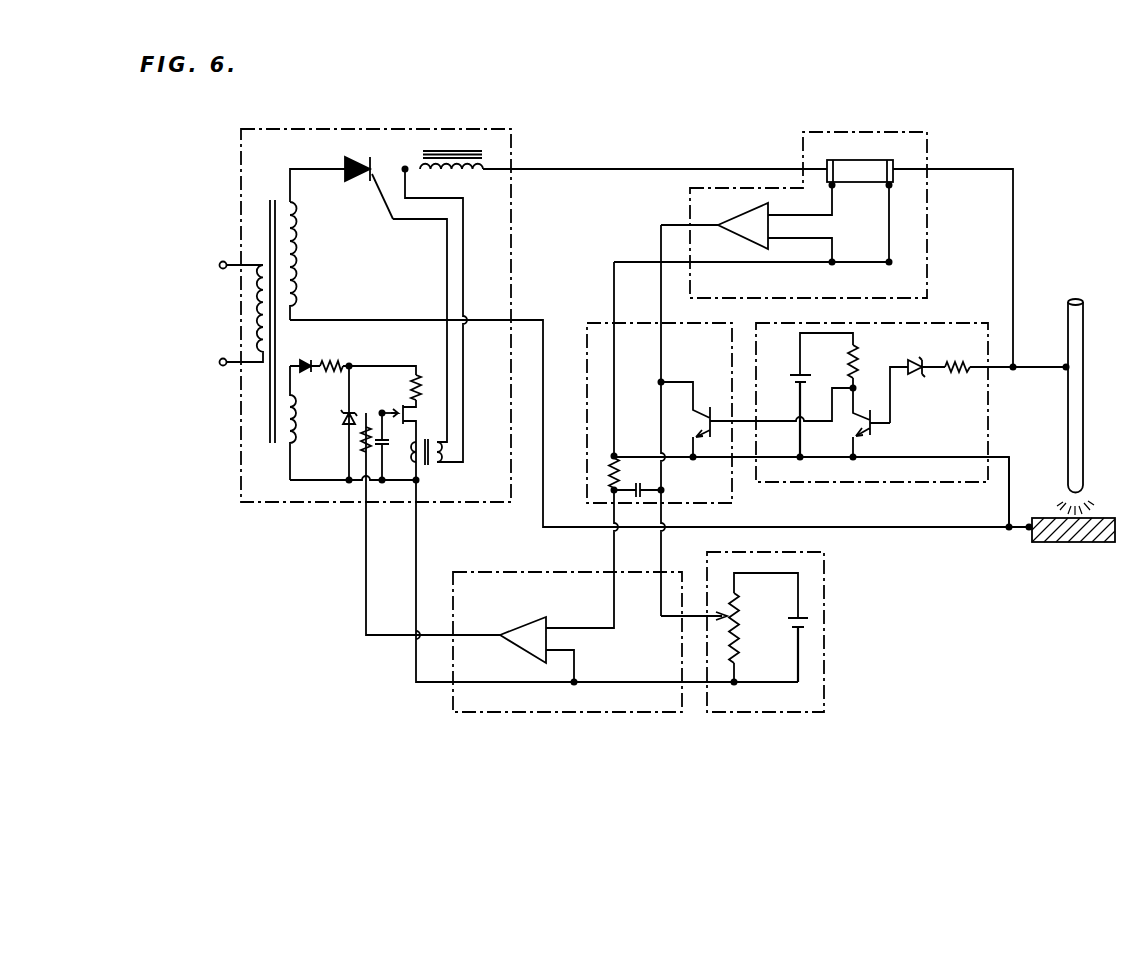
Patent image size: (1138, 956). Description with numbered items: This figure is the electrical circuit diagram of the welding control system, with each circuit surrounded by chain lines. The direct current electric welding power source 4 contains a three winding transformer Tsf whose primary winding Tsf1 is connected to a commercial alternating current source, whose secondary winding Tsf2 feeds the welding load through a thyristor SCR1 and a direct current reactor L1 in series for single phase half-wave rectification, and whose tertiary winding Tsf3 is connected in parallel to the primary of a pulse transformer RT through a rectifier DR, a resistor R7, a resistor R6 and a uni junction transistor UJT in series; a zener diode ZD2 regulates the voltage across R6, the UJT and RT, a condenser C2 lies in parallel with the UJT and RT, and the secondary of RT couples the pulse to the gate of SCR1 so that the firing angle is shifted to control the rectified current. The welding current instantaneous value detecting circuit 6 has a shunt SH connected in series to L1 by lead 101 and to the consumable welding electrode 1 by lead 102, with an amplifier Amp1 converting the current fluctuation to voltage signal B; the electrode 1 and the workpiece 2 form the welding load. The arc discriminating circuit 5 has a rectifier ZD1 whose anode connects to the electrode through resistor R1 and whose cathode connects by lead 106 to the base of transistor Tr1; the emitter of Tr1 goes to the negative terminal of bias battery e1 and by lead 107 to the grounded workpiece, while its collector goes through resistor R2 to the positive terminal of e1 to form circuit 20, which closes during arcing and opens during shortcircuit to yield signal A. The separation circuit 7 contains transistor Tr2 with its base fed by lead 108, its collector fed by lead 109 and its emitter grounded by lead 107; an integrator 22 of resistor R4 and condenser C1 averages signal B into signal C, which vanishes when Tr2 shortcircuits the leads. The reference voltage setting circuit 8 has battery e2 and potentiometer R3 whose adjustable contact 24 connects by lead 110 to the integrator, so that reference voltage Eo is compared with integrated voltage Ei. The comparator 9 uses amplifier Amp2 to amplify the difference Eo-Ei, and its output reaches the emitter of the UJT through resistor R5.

The consumable welding electrode 1 is at (1075, 385).
The workpiece 2 is at (1072, 545).
The direct current electric welding power source 4 is at (275, 503).
The arc discriminating circuit 5 is at (925, 483).
The welding current instantaneous value detecting circuit 6 is at (928, 215).
The separation circuit or gate 7 is at (731, 483).
The reference voltage setting circuit 8 is at (825, 634).
The comparison circuit or comparator 9 is at (453, 693).
The circuit 20 is at (833, 330).
The integrator 22 is at (608, 452).
The slider 24 is at (722, 613).
The lead 101 is at (665, 168).
The lead 102 is at (982, 168).
The lead 106 is at (890, 400).
The lead 107 is at (1010, 488).
The lead 108 is at (772, 421).
The lead 109 is at (661, 280).
The lead 110 is at (697, 612).
The thyristor SCR1 is at (365, 160).
The direct current reactor L1 is at (462, 178).
The three winding transformer Tsf is at (268, 220).
The primary winding Tsf1 is at (250, 265).
The secondary winding Tsf2 is at (298, 235).
The tertiary winding Tsf3 is at (296, 425).
The rectifier DR is at (312, 364).
The resistor R7 is at (336, 366).
The resistor R6 is at (425, 380).
The uni junction transistor UJT is at (401, 407).
The zener diode ZD2 is at (343, 428).
The resistor R5 is at (360, 432).
The condenser C2 is at (388, 447).
The pulse transformer RT is at (430, 462).
The amplifier Amp1 is at (748, 208).
The shunt SH is at (860, 158).
The resistor R4 is at (609, 478).
The condenser C1 is at (637, 480).
The transistor Tr2 is at (700, 410).
The bias battery e1 is at (794, 378).
The resistor R2 is at (866, 367).
The resistor R1 is at (955, 342).
The rectifier ZD1 is at (920, 378).
The transistor Tr1 is at (883, 442).
The amplifier Amp2 is at (512, 627).
The potentiometer R3 is at (737, 627).
The battery e2 is at (807, 617).
The integrated voltage Ei is at (661, 551).
The reference voltage Eo is at (664, 619).
The potential difference Eo-Ei is at (600, 630).